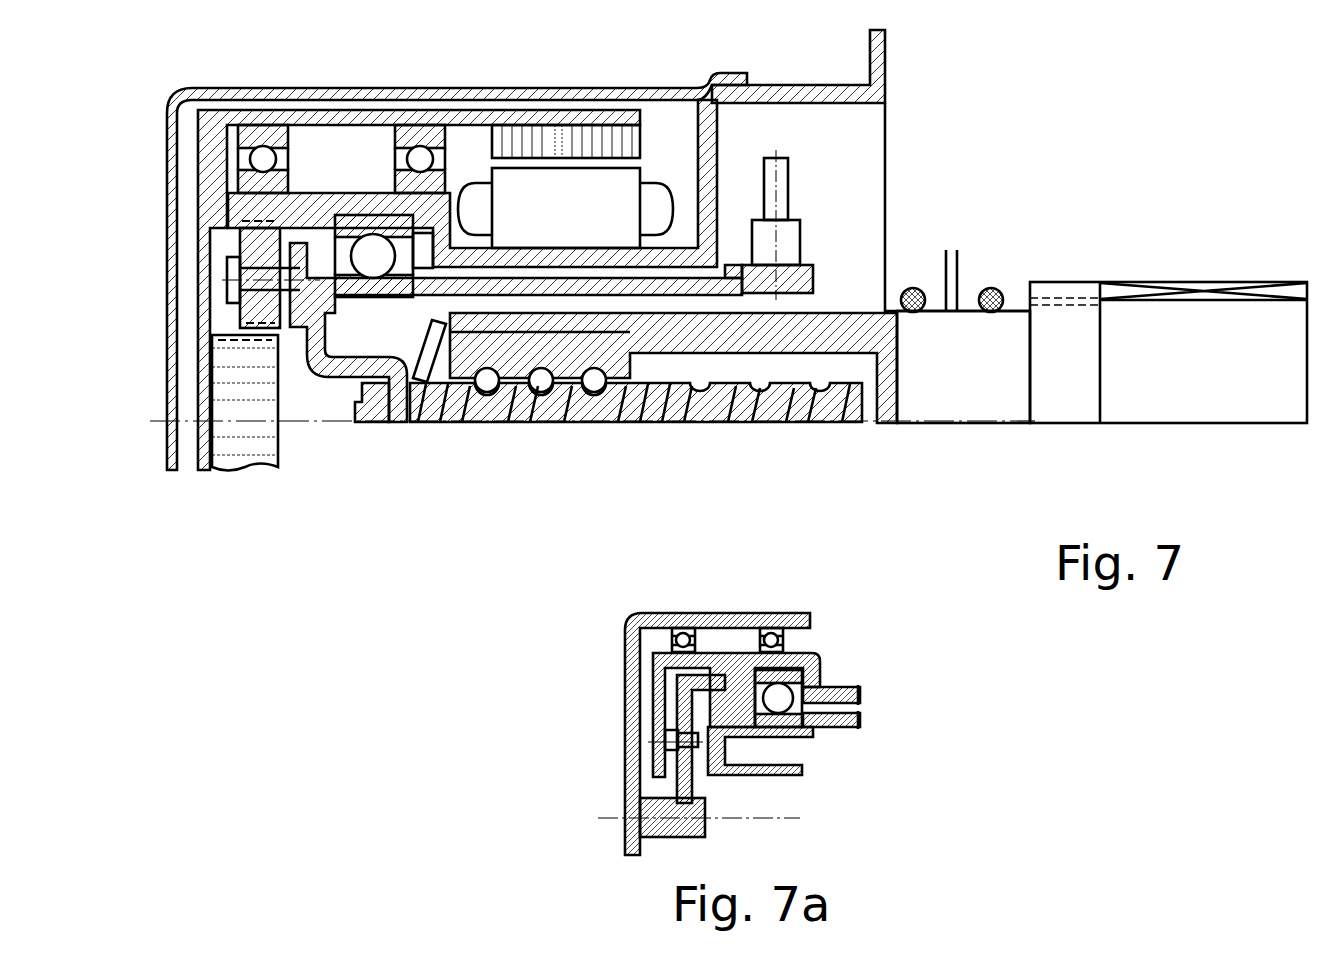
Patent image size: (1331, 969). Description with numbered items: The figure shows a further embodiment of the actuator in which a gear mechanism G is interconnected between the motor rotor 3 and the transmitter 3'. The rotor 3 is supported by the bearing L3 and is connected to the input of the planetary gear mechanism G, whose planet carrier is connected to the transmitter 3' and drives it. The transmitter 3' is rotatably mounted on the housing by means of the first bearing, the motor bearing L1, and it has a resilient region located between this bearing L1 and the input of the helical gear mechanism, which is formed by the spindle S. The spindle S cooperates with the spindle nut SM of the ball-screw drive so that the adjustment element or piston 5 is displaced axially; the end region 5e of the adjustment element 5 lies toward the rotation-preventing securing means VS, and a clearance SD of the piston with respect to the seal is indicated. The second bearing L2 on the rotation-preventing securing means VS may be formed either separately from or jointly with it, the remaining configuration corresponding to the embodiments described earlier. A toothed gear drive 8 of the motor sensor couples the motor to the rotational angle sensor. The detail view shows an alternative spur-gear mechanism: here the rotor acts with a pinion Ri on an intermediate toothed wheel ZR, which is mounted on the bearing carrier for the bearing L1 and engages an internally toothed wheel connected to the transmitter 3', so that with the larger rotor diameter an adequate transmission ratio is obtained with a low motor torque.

In FIG. 7, the rotor 3 is at (566, 250).
In FIG. 7, the transmitter 3' is at (516, 373).
In FIG. 7A, the transmitter 3' is at (736, 664).
In FIG. 7, the bearing for rotor L3 is at (265, 156).
In FIG. 7A, the bearing for rotor L3 is at (683, 636).
In FIG. 7, the motor bearing L1 is at (362, 244).
In FIG. 7A, the motor bearing L1 is at (785, 690).
In FIG. 7, the 2nd bearing on rotation-preventing securing means L2 is at (1078, 298).
In FIG. 7, the gear mechanism G is at (245, 272).
In FIG. 7, the rotor / hub SR is at (243, 462).
In FIG. 7, the spindle nut SM is at (622, 360).
In FIG. 7, the spindle S is at (432, 424).
In FIG. 7, the adjustment element/piston 5 is at (764, 392).
In FIG. 7, the toothed gear drive of the motor sensor 8 is at (790, 239).
In FIG. 7, the clearance of piston with respect to seal SD is at (931, 316).
In FIG. 7, the end region of the adjustment element 5e is at (1010, 382).
In FIG. 7, the rotation-preventing securing means VS is at (1078, 387).
In FIG. 7A, the intermediate toothed wheel ZR is at (692, 790).
In FIG. 7A, the pinion Ri is at (688, 818).